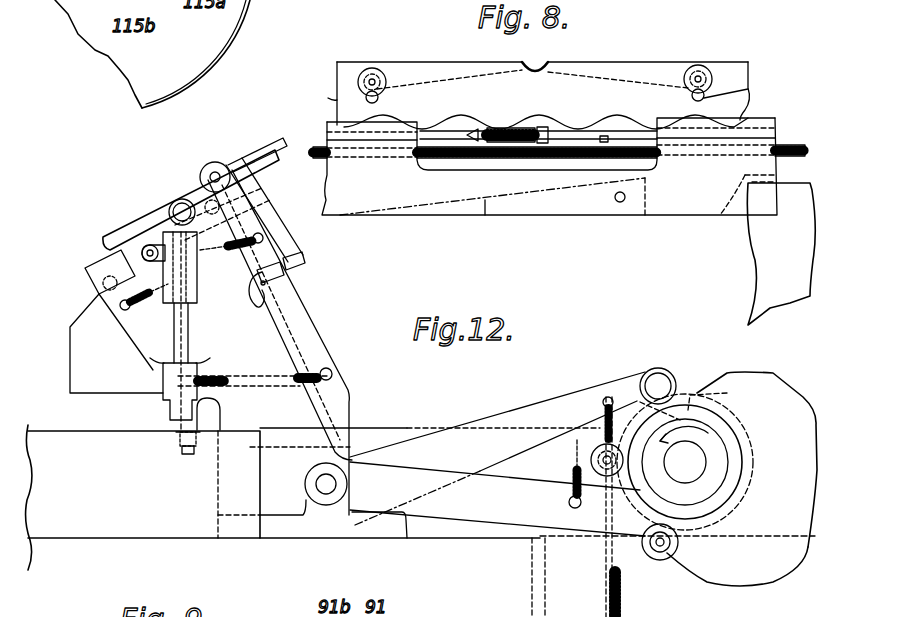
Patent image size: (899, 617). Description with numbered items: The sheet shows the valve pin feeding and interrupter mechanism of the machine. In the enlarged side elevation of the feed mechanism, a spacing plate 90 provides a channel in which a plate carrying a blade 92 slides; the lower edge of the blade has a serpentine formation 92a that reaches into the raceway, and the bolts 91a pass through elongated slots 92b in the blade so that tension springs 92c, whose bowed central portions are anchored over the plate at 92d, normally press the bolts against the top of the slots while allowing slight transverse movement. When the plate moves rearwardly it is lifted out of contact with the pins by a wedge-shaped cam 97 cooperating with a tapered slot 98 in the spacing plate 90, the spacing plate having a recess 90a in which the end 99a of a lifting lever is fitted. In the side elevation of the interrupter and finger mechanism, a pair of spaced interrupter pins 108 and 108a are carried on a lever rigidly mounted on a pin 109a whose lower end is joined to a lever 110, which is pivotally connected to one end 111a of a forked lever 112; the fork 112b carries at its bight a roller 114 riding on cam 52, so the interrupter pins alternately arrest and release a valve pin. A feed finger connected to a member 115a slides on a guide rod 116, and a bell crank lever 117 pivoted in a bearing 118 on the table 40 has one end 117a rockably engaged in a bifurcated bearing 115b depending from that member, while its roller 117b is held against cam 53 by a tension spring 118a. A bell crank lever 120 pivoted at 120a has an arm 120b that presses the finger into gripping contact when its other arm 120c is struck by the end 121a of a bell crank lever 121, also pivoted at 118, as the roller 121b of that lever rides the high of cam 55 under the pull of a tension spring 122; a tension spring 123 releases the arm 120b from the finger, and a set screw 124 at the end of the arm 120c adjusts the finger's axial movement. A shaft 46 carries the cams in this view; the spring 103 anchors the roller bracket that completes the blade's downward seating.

In FIG. 12, the table 40 is at (420, 521).
In FIG. 12, the drive shaft 46 is at (684, 454).
In FIG. 12, the cam 52 is at (752, 447).
In FIG. 12, the cam 53 is at (698, 393).
In FIG. 12, the cam 55 is at (738, 487).
In FIG. 8, the spacing plate 90 is at (722, 216).
In FIG. 8, the recess 90a is at (776, 181).
In FIG. 8, the bolts 91a is at (372, 78).
In FIG. 8, the blade 92 is at (447, 170).
In FIG. 8, the serpentine formation 92a is at (442, 170).
In FIG. 8, the elongated slots 92b is at (755, 91).
In FIG. 8, the tension springs 92c is at (487, 80).
In FIG. 8, the anchorage of bowed spring portions 92d is at (540, 66).
In FIG. 8, the wedge-shaped cam 97 is at (585, 213).
In FIG. 8, the tapered slot 98 is at (460, 213).
In FIG. 8, the lever end 99a is at (781, 254).
In FIG. 8, the guide rail 103 is at (791, 145).
In FIG. 12, the interrupter pin 108 is at (262, 196).
In FIG. 12, the interrupter pin 108a is at (142, 253).
In FIG. 12, the pin 109a is at (181, 330).
In FIG. 12, the lever 110 is at (163, 405).
In FIG. 12, the lever end 111a is at (178, 447).
In FIG. 12, the lever 112 is at (378, 428).
In FIG. 12, the fork 112b is at (727, 393).
In FIG. 12, the roller 114 is at (591, 458).
In FIG. 12, the member 115a is at (226, 158).
In FIG. 12, the bifurcated bearing 115b is at (165, 312).
In FIG. 12, the guide rod 116 is at (232, 192).
In FIG. 12, the bell crank lever 117 is at (497, 448).
In FIG. 12, the lever end 117a is at (240, 214).
In FIG. 12, the roller 117b is at (672, 360).
In FIG. 12, the bearing 118 is at (310, 487).
In FIG. 12, the tension spring 118a is at (648, 565).
In FIG. 12, the bell crank lever 120 is at (198, 192).
In FIG. 12, the pivot 120a is at (233, 153).
In FIG. 12, the arm 120b is at (150, 213).
In FIG. 12, the arm 120c is at (282, 251).
In FIG. 12, the bell crank lever 121 is at (426, 353).
In FIG. 12, the lever end 121a is at (263, 307).
In FIG. 12, the roller 121b is at (667, 553).
In FIG. 12, the tension spring 122 is at (550, 475).
In FIG. 12, the tension spring 123 is at (143, 333).
In FIG. 12, the set screw 124 is at (275, 290).